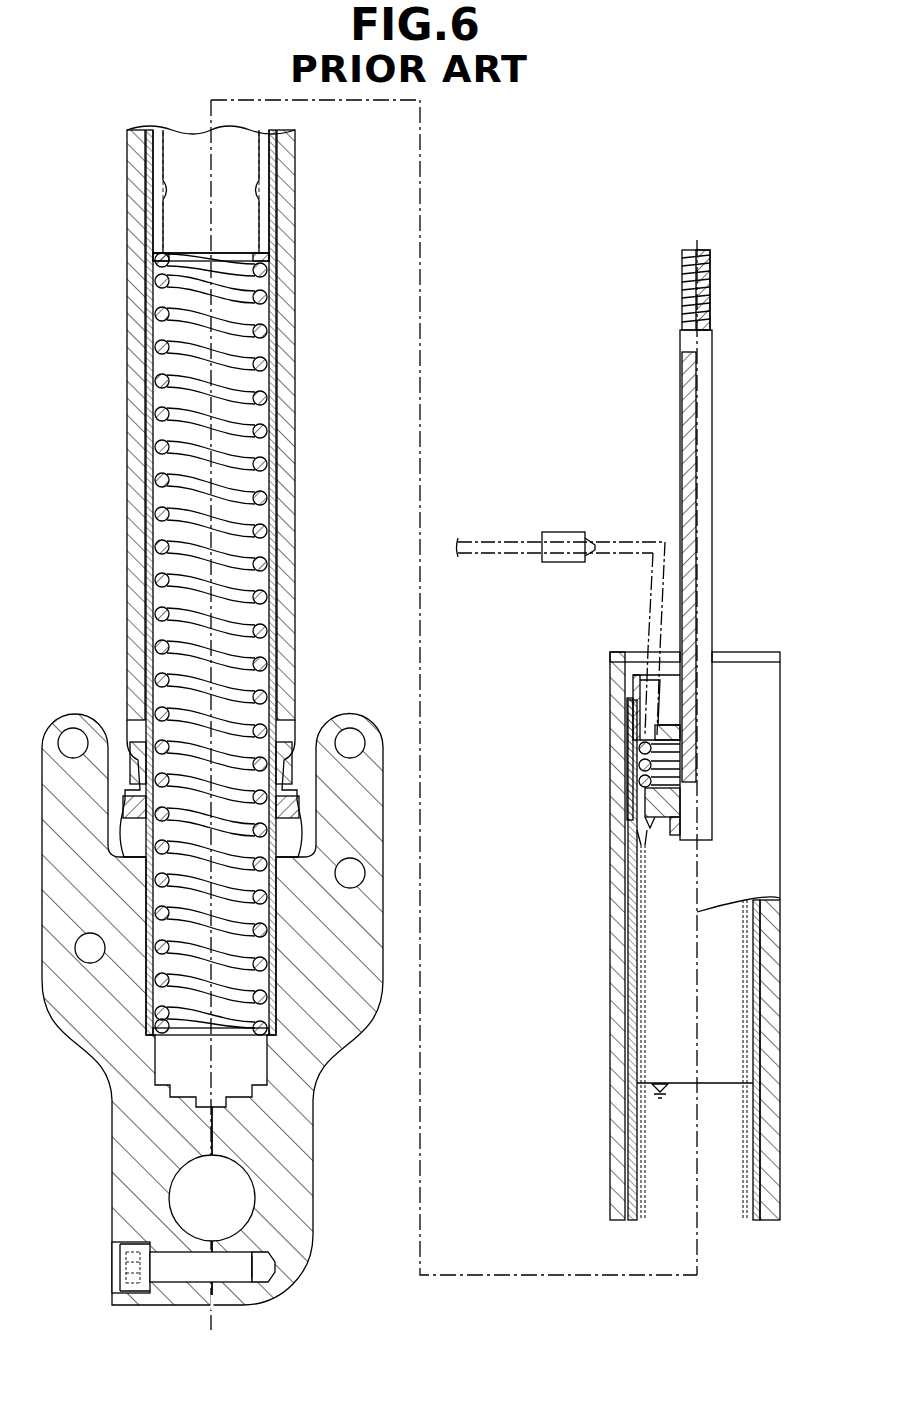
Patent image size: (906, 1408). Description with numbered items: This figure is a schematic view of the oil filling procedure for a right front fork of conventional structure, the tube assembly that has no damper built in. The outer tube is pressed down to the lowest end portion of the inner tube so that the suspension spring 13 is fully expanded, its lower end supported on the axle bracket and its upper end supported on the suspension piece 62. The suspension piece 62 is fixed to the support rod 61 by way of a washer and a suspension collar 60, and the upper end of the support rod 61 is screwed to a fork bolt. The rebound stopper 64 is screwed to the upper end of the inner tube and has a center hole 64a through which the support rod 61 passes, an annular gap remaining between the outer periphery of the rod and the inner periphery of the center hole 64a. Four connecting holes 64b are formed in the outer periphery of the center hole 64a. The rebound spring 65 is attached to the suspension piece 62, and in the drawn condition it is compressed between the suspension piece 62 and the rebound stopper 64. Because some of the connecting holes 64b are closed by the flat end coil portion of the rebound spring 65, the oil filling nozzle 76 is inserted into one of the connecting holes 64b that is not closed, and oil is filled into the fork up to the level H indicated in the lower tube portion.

The suspension spring 13 is at (160, 548).
The suspension collar 60 is at (641, 995).
The support rod 61 is at (682, 413).
The suspension piece 62 is at (672, 800).
The rebound stopper 64 is at (668, 730).
The center hole 64a is at (675, 735).
The connecting holes 64b is at (633, 738).
The rebound spring 65 is at (640, 755).
The oil filling nozzle 76 is at (607, 540).
The oil level H is at (668, 1083).